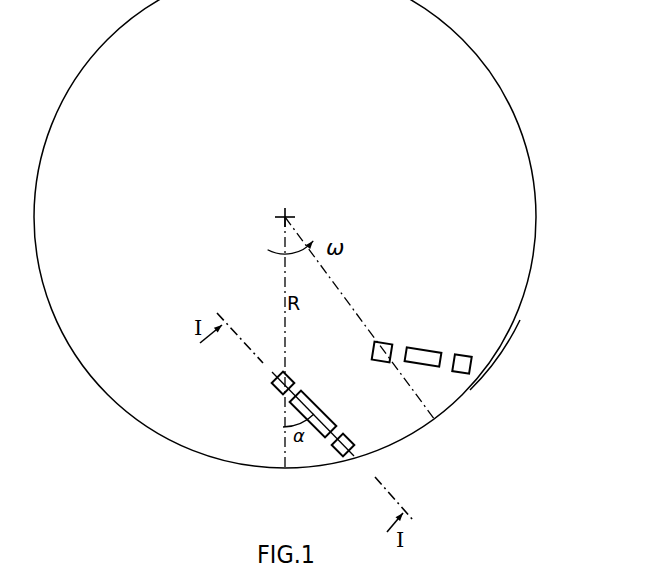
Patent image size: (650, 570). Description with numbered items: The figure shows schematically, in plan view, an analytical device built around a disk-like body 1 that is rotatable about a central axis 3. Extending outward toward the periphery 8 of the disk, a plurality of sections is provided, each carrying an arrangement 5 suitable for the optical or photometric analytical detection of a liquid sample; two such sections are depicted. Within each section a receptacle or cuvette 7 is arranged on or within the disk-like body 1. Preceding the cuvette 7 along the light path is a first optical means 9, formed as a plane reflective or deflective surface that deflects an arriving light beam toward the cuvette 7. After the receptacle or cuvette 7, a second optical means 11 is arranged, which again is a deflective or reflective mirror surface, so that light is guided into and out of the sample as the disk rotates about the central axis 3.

The disk-like body 1 is at (497, 118).
The central axis 3 is at (286, 216).
The arrangements 5 is at (423, 334).
The receptacle or cuvette 7 is at (314, 405).
The periphery 8 is at (498, 353).
The first optical means 9 is at (277, 394).
The second optical means 11 is at (353, 437).